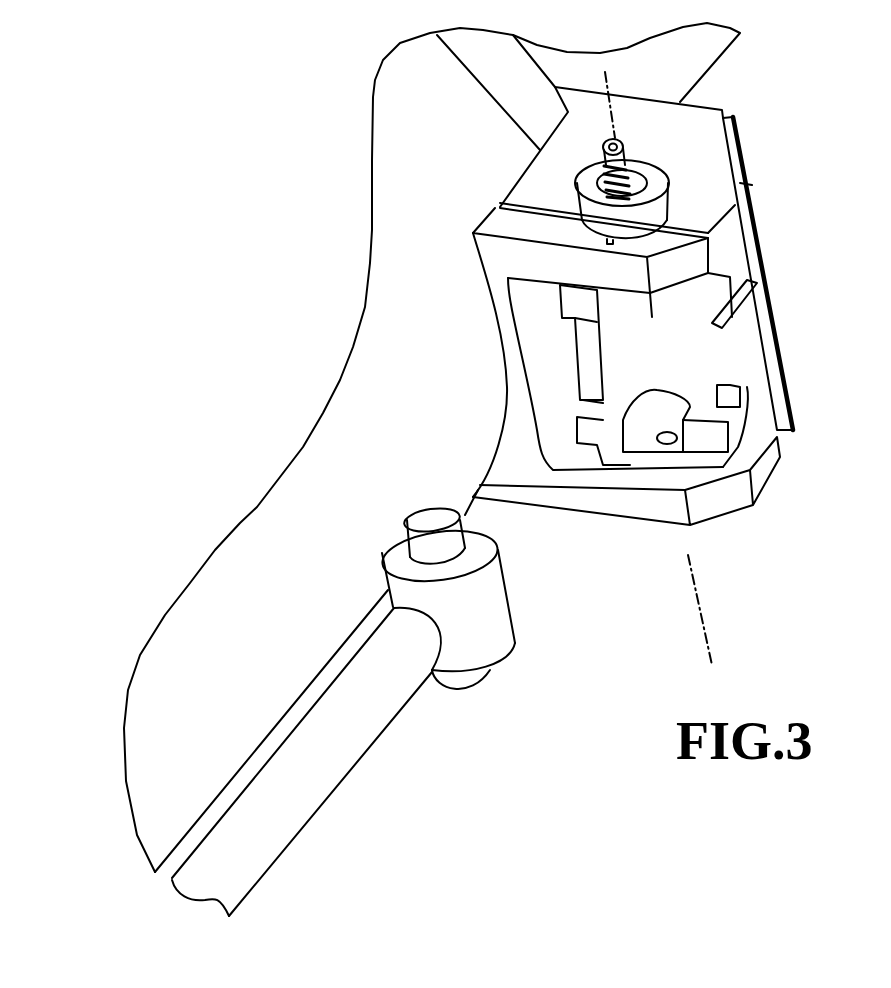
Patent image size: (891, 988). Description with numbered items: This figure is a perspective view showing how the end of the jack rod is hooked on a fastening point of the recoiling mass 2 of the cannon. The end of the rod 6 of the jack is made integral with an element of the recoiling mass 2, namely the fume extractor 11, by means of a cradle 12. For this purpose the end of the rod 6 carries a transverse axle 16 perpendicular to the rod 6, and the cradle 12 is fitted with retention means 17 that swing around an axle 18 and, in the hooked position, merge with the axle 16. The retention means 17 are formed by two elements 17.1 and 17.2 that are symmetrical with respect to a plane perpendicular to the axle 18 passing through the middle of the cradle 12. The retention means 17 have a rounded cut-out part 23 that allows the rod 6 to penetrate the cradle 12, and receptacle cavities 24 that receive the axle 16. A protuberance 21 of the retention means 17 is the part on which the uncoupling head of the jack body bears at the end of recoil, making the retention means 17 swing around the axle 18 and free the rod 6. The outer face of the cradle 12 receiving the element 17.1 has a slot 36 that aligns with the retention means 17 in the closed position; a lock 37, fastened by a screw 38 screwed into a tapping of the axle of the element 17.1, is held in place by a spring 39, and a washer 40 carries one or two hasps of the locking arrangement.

The recoiling mass 2 is at (724, 62).
The rod 6 is at (342, 789).
The fume extractor 11 is at (537, 63).
The cradle 12 is at (782, 148).
The transverse axle 16 is at (421, 507).
The retention means 17 is at (568, 383).
The element of retention means 17.1 is at (560, 305).
The element of retention means 17.2 is at (577, 433).
The axle 18 is at (608, 72).
The protuberance 21 is at (775, 297).
The rounded cut-out part 23 is at (737, 360).
The receptacle cavities 24 is at (613, 295).
The slot 36 is at (553, 210).
The lock 37 is at (747, 192).
The screw 38 is at (620, 147).
The spring 39 is at (648, 186).
The washer 40 is at (635, 167).